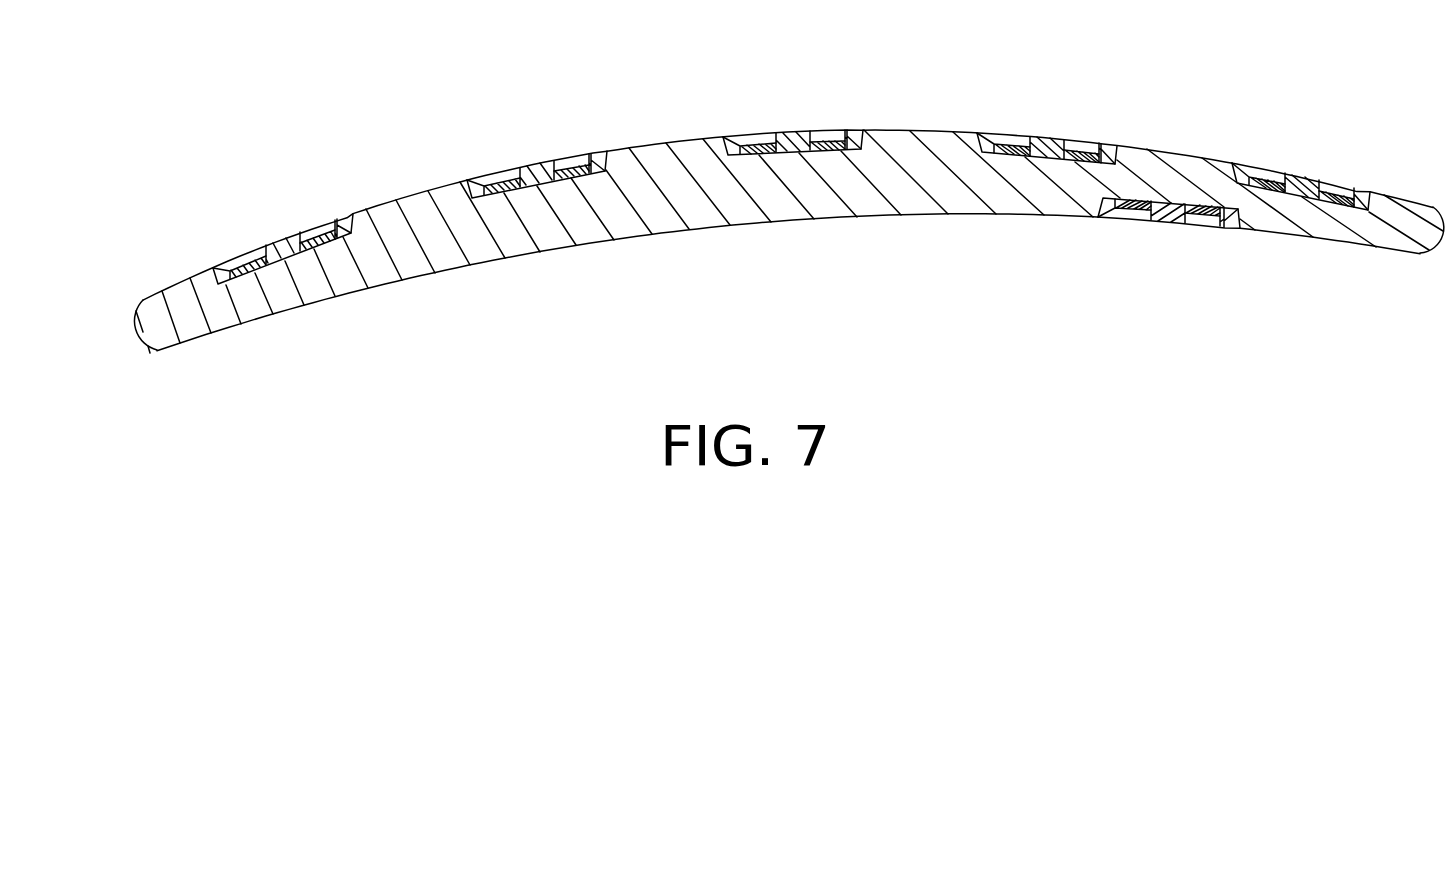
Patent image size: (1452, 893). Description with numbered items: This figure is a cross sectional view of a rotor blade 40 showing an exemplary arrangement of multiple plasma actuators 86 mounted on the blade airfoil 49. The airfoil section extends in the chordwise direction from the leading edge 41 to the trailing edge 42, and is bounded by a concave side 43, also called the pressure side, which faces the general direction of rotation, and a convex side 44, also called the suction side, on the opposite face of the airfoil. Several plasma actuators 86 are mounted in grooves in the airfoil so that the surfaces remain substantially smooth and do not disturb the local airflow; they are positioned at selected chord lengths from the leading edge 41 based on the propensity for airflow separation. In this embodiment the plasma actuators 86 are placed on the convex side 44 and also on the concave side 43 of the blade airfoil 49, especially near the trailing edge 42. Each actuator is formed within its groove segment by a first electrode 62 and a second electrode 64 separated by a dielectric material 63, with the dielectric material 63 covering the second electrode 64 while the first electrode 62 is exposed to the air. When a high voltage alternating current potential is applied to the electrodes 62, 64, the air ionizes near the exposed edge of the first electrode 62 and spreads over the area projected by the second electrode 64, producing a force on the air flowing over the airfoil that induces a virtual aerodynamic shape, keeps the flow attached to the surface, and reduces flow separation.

The rotor blade 40 is at (783, 217).
The leading edge 41 is at (130, 334).
The trailing edge 42 is at (1437, 248).
The concave side 43 is at (401, 284).
The convex side 44 is at (410, 199).
The blade airfoil 49 is at (697, 186).
The first electrode 62 is at (236, 255).
The dielectric material 63 is at (274, 245).
The second electrode 64 is at (312, 233).
The plasma actuator 86 is at (766, 175).